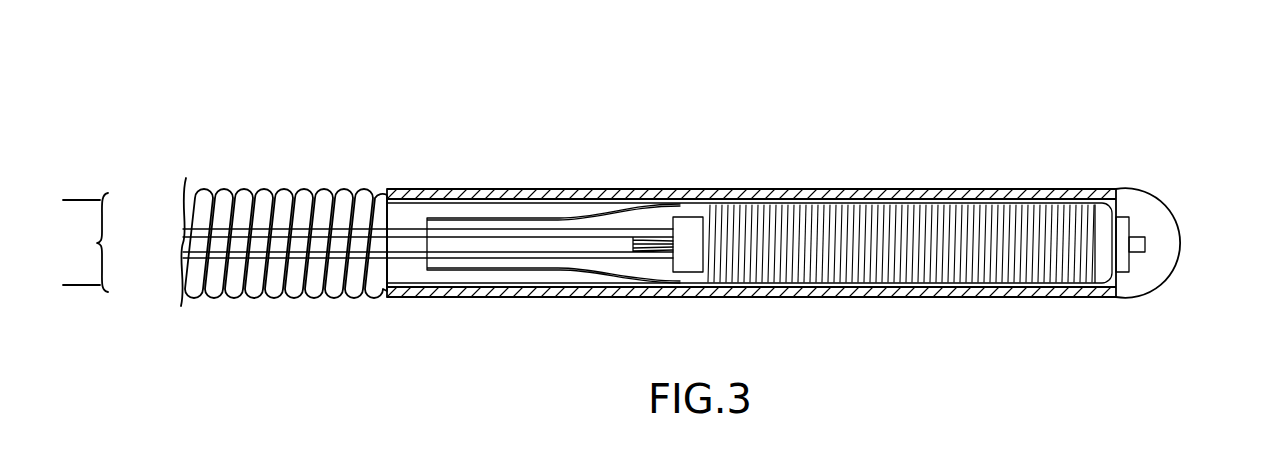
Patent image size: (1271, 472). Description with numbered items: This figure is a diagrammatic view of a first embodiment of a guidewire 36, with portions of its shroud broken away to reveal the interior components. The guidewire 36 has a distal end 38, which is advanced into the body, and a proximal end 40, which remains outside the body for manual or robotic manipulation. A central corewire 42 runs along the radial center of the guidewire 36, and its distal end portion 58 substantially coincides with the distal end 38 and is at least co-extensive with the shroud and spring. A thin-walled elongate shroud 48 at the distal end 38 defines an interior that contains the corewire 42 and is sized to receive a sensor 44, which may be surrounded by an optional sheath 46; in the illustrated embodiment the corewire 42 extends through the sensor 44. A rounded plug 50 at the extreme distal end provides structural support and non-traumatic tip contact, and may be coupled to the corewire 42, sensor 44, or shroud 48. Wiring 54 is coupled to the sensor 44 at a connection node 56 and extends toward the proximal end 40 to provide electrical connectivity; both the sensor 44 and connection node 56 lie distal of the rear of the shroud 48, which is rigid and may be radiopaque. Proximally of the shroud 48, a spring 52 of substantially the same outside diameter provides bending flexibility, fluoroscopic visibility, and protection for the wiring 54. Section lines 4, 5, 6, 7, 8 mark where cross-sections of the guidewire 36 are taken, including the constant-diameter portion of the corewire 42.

The guidewire 36 is at (790, 113).
The distal end 38 is at (1140, 194).
The proximal end 40 is at (85, 189).
The central corewire 42 is at (1136, 241).
The sensor 44 is at (791, 242).
The sheath 46 is at (457, 218).
The shroud 48 is at (425, 298).
The plug 50 is at (1142, 198).
The spring 52 is at (235, 298).
The wiring 54 is at (402, 243).
The connection node 56 is at (655, 224).
The distal end portion 58 is at (336, 161).
The section line 4- 4 is at (178, 243).
The section line 5- 5 is at (934, 244).
The section line 6- 6 is at (702, 244).
The section line 7- 7 is at (652, 244).
The section line 8- 8 is at (578, 244).